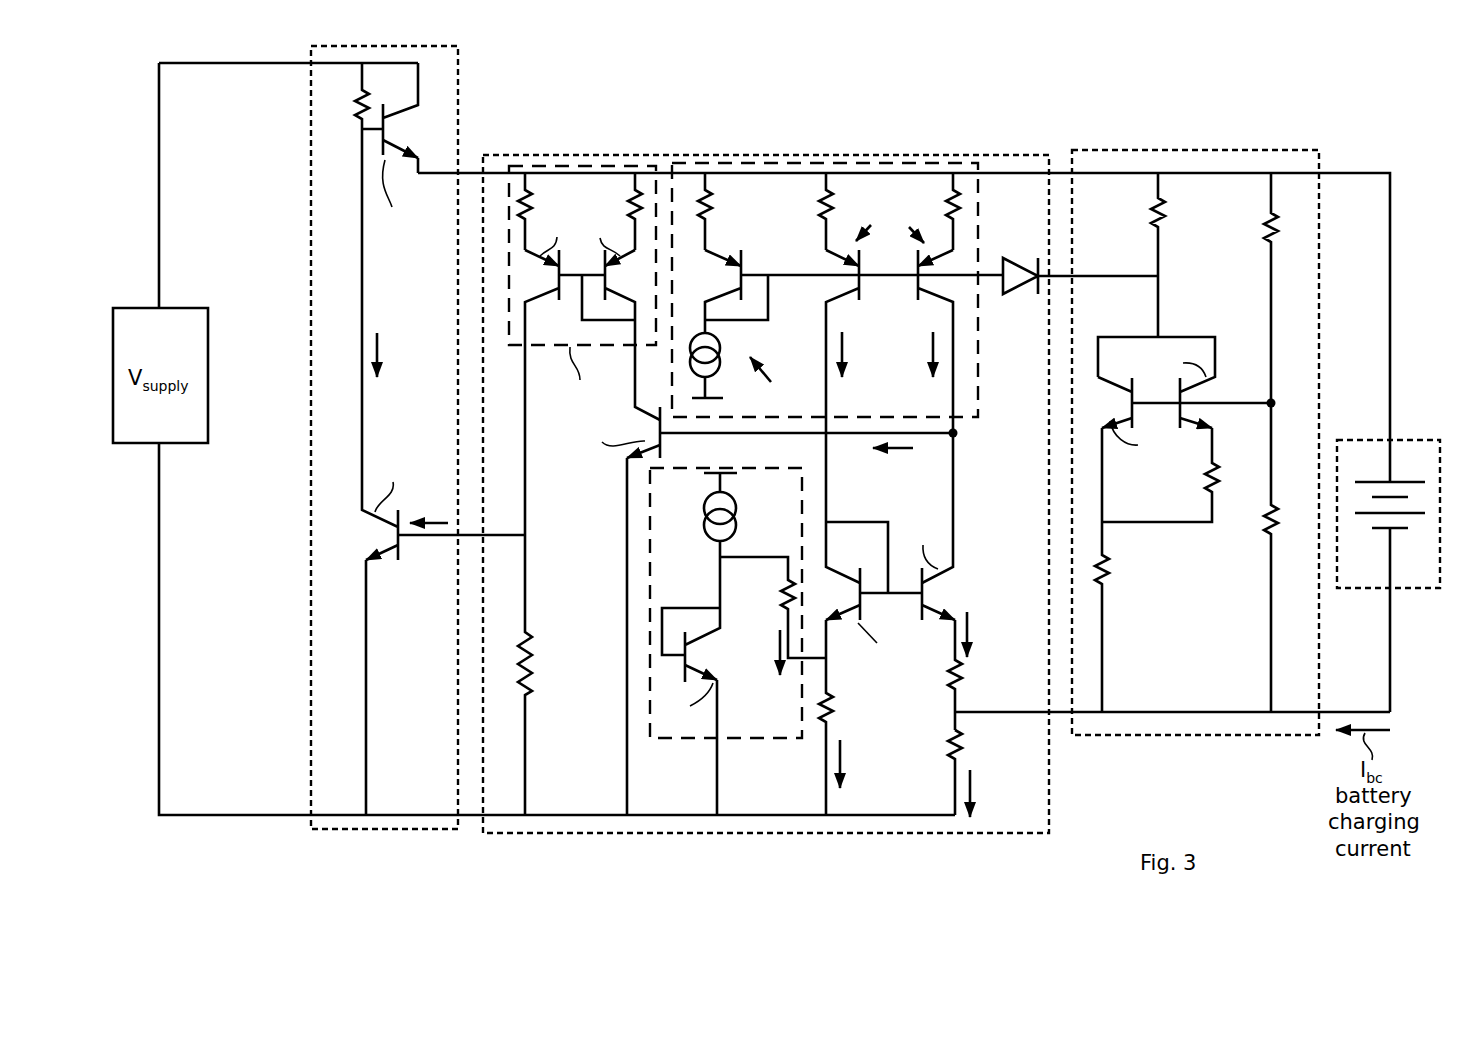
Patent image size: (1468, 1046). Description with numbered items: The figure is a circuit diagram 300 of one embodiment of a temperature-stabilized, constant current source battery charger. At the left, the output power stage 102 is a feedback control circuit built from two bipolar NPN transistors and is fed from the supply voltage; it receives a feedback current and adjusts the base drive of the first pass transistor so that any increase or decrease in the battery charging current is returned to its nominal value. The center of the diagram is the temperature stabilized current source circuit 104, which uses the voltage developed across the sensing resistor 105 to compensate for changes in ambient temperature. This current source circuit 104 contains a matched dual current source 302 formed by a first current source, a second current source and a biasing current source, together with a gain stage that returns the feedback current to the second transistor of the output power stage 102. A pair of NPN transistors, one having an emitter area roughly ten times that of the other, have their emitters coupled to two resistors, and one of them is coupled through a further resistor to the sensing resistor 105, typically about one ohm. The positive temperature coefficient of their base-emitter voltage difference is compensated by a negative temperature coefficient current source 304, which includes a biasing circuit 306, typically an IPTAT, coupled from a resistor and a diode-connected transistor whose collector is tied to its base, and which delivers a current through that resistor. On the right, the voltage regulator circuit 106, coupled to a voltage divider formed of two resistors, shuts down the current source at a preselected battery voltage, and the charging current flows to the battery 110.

The first stage 102 is at (338, 829).
The second stage 104 is at (832, 155).
The sensing resistor 105 is at (930, 750).
The third stage 106 is at (1100, 148).
The battery 110 is at (1412, 440).
The circuit diagram 300 is at (820, 522).
The matched dual current source 302 is at (973, 417).
The negative temperature coefficient current source 304 is at (738, 641).
The biasing circuit 306 is at (705, 510).